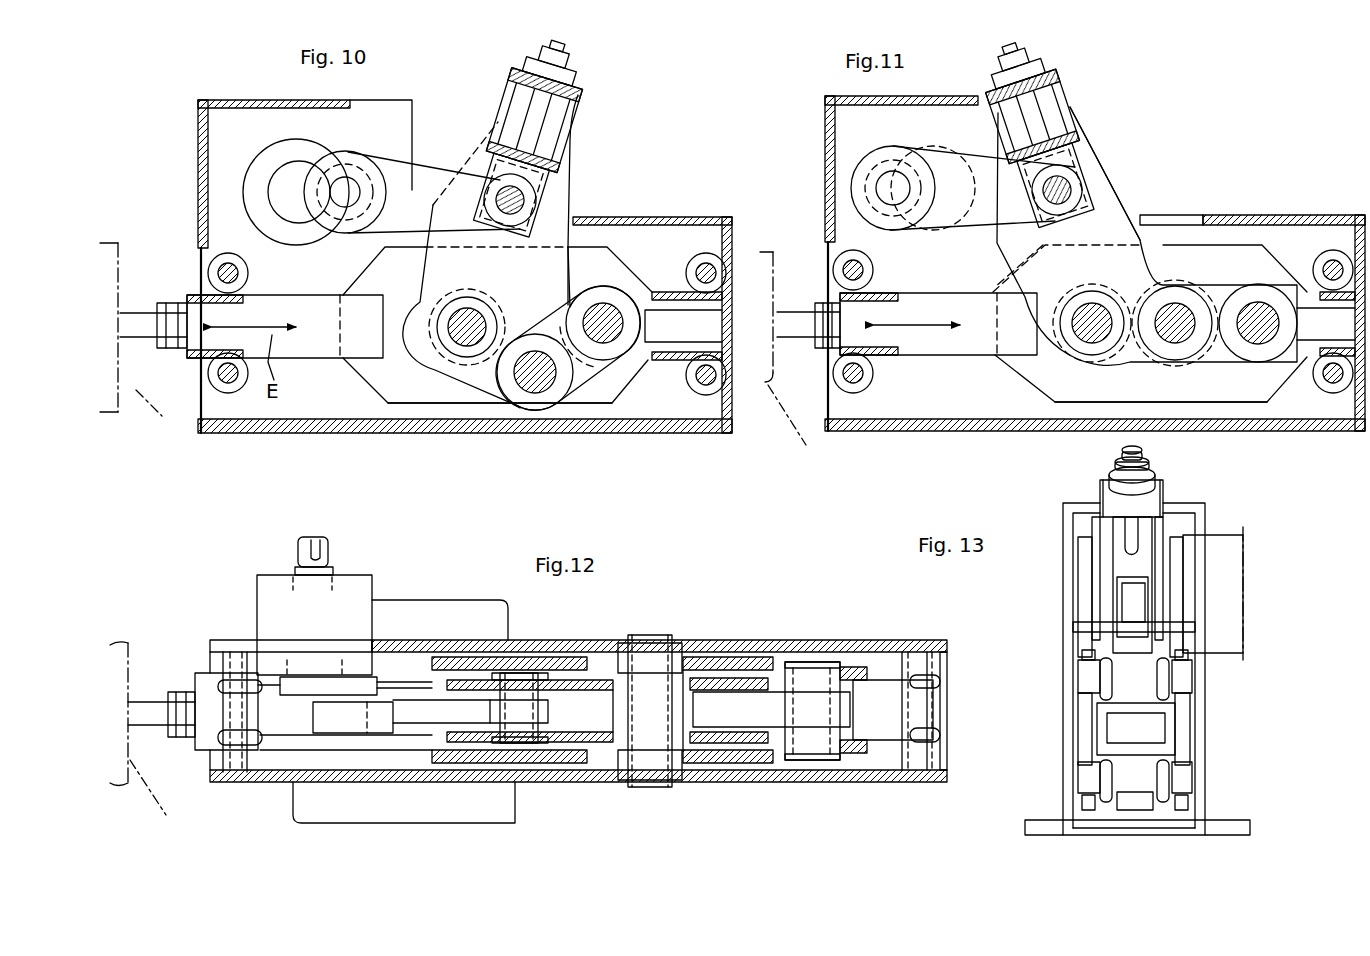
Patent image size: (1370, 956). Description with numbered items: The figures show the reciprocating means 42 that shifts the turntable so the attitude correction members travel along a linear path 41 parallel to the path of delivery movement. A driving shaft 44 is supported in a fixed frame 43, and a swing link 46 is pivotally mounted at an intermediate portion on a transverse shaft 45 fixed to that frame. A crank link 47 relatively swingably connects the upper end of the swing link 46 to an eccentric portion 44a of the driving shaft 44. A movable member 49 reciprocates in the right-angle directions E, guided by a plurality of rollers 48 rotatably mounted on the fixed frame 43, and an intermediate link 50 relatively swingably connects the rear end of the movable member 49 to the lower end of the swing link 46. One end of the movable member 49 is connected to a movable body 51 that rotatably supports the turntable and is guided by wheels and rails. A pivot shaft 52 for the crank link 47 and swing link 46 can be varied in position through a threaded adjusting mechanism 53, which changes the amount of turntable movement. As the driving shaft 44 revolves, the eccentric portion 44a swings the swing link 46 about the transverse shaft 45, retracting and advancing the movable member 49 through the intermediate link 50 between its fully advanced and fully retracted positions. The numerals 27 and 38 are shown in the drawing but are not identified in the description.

In FIG. 11, the reciprocating rod 27 is at (907, 381).
In FIG. 11, the screw 38 is at (1342, 217).
In FIG. 12, the linear path 41 is at (317, 601).
In FIG. 10, the reciprocating means 42 is at (672, 118).
In FIG. 11, the reciprocating means 42 is at (1205, 100).
In FIG. 12, the reciprocating means 42 is at (688, 630).
In FIG. 13, the reciprocating means 42 is at (1258, 518).
In FIG. 10, the fixed frame 43 is at (465, 296).
In FIG. 11, the fixed frame 43 is at (1095, 289).
In FIG. 12, the fixed frame 43 is at (578, 728).
In FIG. 13, the fixed frame 43 is at (1130, 669).
In FIG. 10, the driving shaft 44 is at (246, 192).
In FIG. 11, the driving shaft 44 is at (913, 210).
In FIG. 10, the eccentric portion 44a is at (412, 220).
In FIG. 11, the eccentric portion 44a is at (926, 188).
In FIG. 12, the eccentric portion 44a is at (374, 746).
In FIG. 10, the transverse shaft 45 is at (467, 385).
In FIG. 11, the transverse shaft 45 is at (1092, 342).
In FIG. 12, the transverse shaft 45 is at (650, 738).
In FIG. 10, the swing link 46 is at (620, 240).
In FIG. 11, the swing link 46 is at (1137, 173).
In FIG. 12, the swing link 46 is at (607, 752).
In FIG. 13, the swing link 46 is at (1101, 587).
In FIG. 10, the crank link 47 is at (522, 252).
In FIG. 11, the crank link 47 is at (1130, 236).
In FIG. 12, the crank link 47 is at (630, 666).
In FIG. 13, the crank link 47 is at (1084, 607).
In FIG. 10, the rollers 48 is at (474, 328).
In FIG. 11, the rollers 48 is at (1093, 365).
In FIG. 12, the rollers 48 is at (586, 722).
In FIG. 13, the rollers 48 is at (1140, 757).
In FIG. 10, the movable member 49 is at (500, 447).
In FIG. 11, the movable member 49 is at (1147, 433).
In FIG. 12, the movable member 49 is at (728, 714).
In FIG. 13, the movable member 49 is at (1149, 748).
In FIG. 10, the intermediate link 50 is at (568, 383).
In FIG. 11, the intermediate link 50 is at (1214, 375).
In FIG. 12, the intermediate link 50 is at (826, 751).
In FIG. 10, the movable body 51 is at (141, 339).
In FIG. 11, the movable body 51 is at (795, 361).
In FIG. 12, the movable body 51 is at (152, 743).
In FIG. 10, the pivot shaft 52 is at (562, 186).
In FIG. 11, the pivot shaft 52 is at (1099, 171).
In FIG. 12, the pivot shaft 52 is at (535, 673).
In FIG. 10, the threaded adjusting mechanism 53 is at (581, 50).
In FIG. 11, the threaded adjusting mechanism 53 is at (1047, 48).
In FIG. 13, the threaded adjusting mechanism 53 is at (1161, 481).